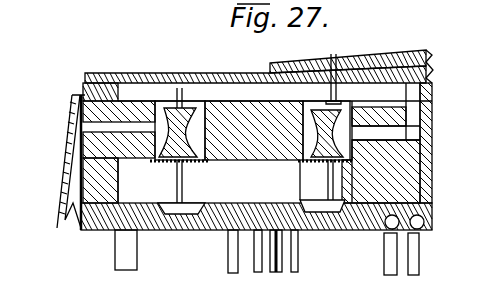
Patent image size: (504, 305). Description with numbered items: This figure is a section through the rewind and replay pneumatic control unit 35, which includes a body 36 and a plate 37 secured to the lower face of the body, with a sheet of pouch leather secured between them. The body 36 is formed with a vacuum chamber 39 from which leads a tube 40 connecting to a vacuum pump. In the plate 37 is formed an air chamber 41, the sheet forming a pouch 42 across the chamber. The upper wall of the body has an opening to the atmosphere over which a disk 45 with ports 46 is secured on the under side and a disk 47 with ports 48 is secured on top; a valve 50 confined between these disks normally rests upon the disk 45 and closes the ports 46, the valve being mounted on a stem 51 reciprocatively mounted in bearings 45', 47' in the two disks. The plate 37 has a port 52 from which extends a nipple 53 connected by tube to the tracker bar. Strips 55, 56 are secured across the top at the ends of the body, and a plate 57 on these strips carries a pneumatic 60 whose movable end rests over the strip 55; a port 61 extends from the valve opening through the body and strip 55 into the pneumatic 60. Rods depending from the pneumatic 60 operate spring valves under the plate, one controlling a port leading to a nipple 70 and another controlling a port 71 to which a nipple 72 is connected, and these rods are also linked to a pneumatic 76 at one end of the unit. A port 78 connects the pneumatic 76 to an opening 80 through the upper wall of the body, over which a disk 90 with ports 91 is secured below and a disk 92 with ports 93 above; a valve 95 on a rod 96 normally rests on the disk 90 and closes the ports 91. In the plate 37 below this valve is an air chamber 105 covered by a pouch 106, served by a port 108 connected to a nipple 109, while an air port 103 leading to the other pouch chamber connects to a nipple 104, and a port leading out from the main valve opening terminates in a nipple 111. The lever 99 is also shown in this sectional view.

The strip 56 is at (96, 73).
The port 78 is at (130, 128).
The opening 80 is at (168, 107).
The plate 57 is at (203, 80).
The ports 93 is at (178, 101).
The disk 92 is at (162, 152).
The valve 95 is at (288, 122).
The disk 47 is at (319, 122).
The ports 48 is at (327, 96).
The bearing 47' is at (349, 67).
The pneumatic 60 is at (428, 60).
The strip 55 is at (433, 97).
The valve 50 is at (353, 109).
The port 61 is at (409, 131).
The rewind and replay pneumatic control unit 35 is at (399, 171).
The body 36 is at (430, 199).
The plate 37 is at (427, 222).
The pneumatic 76 is at (62, 173).
The vacuum chamber 39 is at (275, 152).
The ports 91 is at (158, 162).
The rod 96 is at (181, 162).
The disk 90 is at (254, 146).
The lever 99 is at (330, 136).
The air port 103 is at (243, 195).
The disk 45 is at (280, 183).
The bearing 45' is at (295, 195).
The ports 46 is at (324, 163).
The stem 51 is at (333, 194).
The tube 40 is at (118, 247).
The air chamber 105 is at (159, 203).
The pouch 106 is at (190, 235).
The port 108 is at (213, 235).
The nipple 109 is at (231, 273).
The nipple 104 is at (258, 273).
The nipple 111 is at (276, 273).
The nipple 53 is at (294, 273).
The port 52 is at (300, 233).
The pouch 42 is at (333, 212).
The air chamber 41 is at (362, 233).
The port 71 is at (382, 232).
The nipple 72 is at (390, 275).
The nipple 70 is at (418, 258).